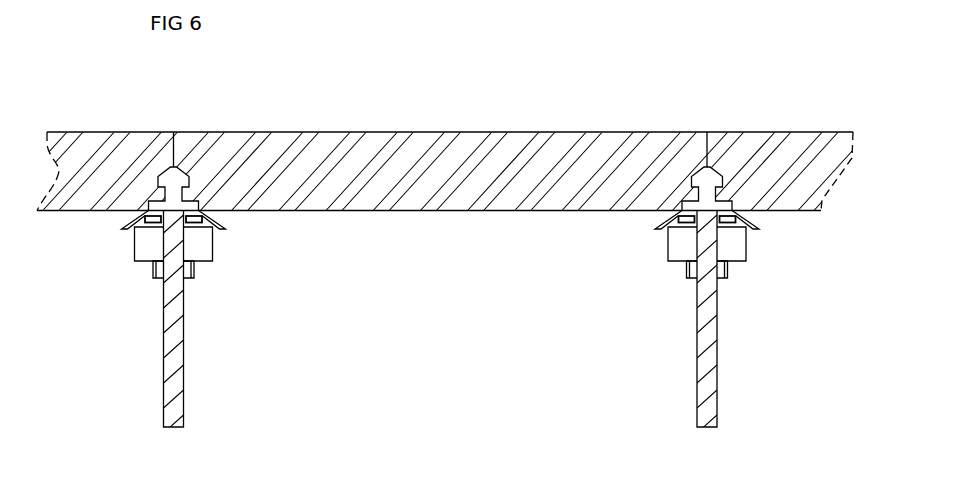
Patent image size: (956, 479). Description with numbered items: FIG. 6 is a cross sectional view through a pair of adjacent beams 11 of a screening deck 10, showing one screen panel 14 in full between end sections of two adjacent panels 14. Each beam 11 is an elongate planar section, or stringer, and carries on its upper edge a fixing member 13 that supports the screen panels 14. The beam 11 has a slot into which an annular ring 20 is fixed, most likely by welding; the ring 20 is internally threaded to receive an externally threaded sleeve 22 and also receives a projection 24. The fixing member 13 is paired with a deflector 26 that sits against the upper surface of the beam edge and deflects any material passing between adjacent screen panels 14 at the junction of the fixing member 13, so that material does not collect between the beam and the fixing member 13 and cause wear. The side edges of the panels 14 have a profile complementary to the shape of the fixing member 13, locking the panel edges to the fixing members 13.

The screening deck 10 is at (735, 71).
The beam 11 is at (171, 393).
The fixing member 13 is at (176, 192).
The screen panel 14 is at (97, 143).
The annular ring 20 is at (202, 247).
The sleeve 22 is at (152, 224).
The projection 24 is at (192, 275).
The deflector 26 is at (128, 221).